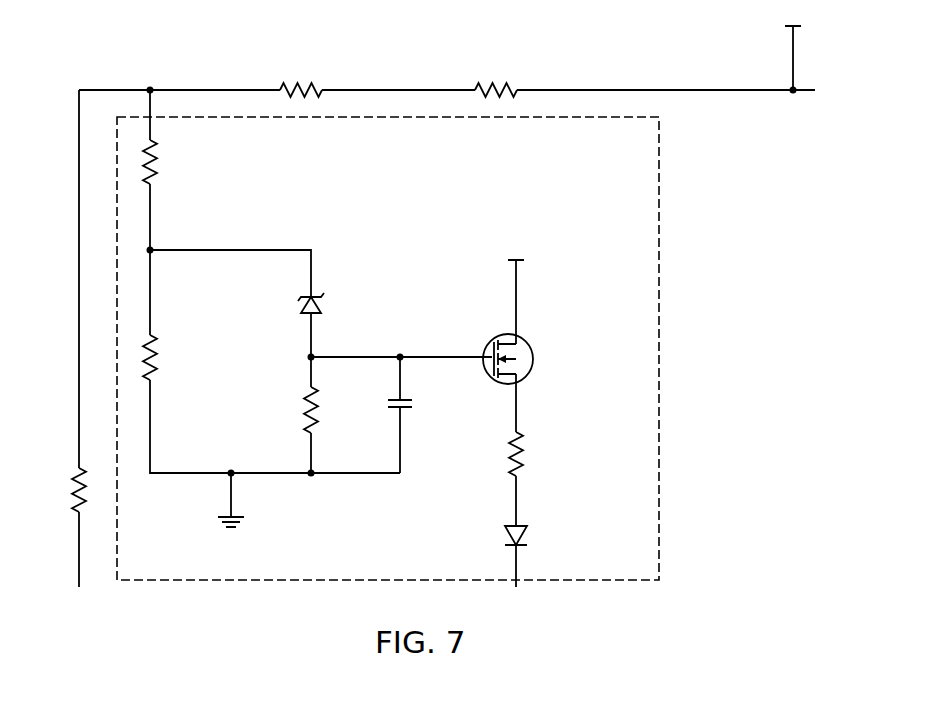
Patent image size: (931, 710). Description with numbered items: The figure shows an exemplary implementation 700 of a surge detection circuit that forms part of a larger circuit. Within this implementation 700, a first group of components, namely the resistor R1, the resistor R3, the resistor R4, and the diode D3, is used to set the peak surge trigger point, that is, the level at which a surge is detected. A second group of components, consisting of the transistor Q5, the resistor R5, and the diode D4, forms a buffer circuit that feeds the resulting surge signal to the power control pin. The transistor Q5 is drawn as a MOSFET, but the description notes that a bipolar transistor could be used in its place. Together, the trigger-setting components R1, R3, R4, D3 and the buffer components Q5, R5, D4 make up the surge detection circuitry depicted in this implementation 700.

The exemplary implementation of the surge detection circuit 700 is at (152, 56).
The resistor R1 is at (164, 162).
The resistor R3 is at (167, 357).
The resistor R4 is at (324, 410).
The resistor R5 is at (532, 454).
The diode D3 is at (320, 303).
The diode D4 is at (525, 533).
The transistor Q5 is at (511, 357).